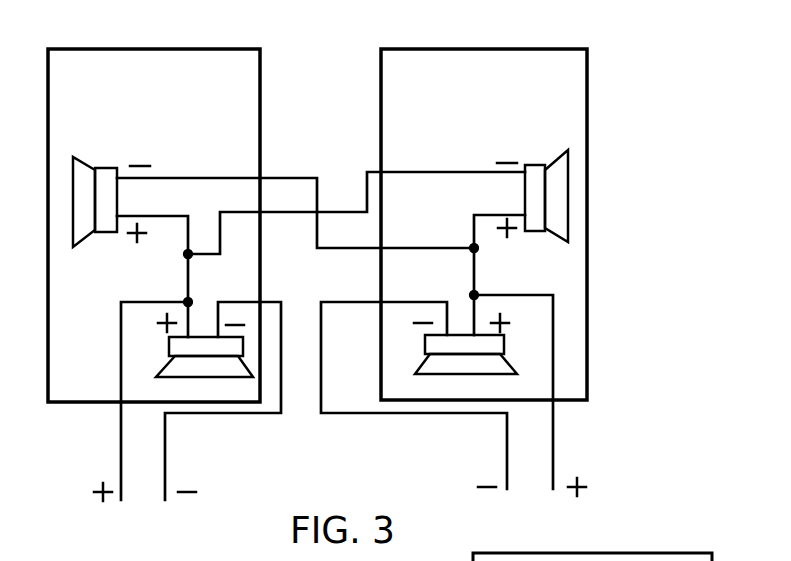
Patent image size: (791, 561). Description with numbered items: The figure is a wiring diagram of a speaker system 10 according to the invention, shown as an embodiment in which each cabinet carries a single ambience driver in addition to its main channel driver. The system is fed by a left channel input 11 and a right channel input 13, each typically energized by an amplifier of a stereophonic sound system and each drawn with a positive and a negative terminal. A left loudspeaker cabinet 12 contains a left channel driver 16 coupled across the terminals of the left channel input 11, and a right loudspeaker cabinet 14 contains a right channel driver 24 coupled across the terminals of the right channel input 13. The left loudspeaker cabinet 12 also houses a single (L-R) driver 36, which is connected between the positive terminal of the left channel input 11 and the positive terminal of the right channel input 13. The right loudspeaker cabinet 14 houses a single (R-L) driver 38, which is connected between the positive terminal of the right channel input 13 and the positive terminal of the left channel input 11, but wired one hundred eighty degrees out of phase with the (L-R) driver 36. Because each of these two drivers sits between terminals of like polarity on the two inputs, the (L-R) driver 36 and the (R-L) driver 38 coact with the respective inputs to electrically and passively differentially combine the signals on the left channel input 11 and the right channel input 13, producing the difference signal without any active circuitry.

The speaker system 10 is at (614, 67).
The left channel input 11 is at (143, 455).
The left loudspeaker cabinet 12 is at (201, 49).
The right channel input 13 is at (535, 443).
The right loudspeaker cabinet 14 is at (466, 47).
The left channel driver 16 is at (162, 372).
The right channel driver 24 is at (508, 362).
The (L-R) driver 36 is at (84, 163).
The (R-L) driver 38 is at (556, 160).